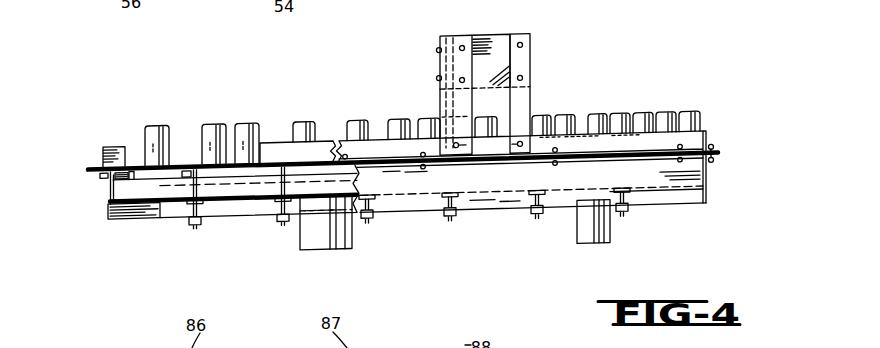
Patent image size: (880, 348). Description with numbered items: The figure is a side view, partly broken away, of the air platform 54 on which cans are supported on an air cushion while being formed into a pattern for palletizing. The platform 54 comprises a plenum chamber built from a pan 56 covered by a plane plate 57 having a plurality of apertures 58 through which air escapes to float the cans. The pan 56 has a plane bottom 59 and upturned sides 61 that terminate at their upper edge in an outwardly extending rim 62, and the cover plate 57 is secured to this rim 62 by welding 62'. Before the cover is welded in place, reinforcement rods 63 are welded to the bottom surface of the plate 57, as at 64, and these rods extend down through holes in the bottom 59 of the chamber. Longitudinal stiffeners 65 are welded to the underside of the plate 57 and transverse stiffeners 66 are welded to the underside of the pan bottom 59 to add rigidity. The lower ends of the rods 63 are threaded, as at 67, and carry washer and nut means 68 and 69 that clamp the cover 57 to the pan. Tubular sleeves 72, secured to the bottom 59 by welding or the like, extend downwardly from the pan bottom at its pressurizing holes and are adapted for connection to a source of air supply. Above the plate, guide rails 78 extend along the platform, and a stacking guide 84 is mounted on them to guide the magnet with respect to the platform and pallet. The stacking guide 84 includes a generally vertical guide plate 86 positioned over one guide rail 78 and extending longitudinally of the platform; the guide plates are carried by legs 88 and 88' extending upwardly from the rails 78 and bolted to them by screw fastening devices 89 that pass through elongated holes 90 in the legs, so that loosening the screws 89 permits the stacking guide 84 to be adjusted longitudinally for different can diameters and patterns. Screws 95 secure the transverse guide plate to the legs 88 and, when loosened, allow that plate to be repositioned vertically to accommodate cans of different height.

The air platform 54 is at (117, 115).
The pan 56 is at (103, 203).
The plane plate 57 is at (125, 163).
The apertures 58 is at (161, 172).
The plane bottom 59 is at (670, 190).
The upturned sides 61 is at (107, 186).
The rim 62 is at (743, 163).
The welding 62' is at (396, 161).
The reinforcement rods 63 is at (200, 181).
The weld 64 is at (191, 175).
The longitudinal stiffeners 65 is at (257, 174).
The transverse stiffeners 66 is at (176, 207).
The threaded lower end 67 is at (371, 224).
The washer means 68 is at (531, 218).
The nut means 69 is at (452, 223).
The tubular sleeves 72 is at (313, 251).
The guide rails 78 is at (645, 142).
The stacking guide 84 is at (437, 62).
The guide plate 86 is at (497, 43).
The leg 88 is at (545, 94).
The leg 88' is at (428, 75).
The screw fastening devices 89 is at (528, 144).
The elongated holes 90 is at (455, 145).
The screws 95 is at (436, 78).